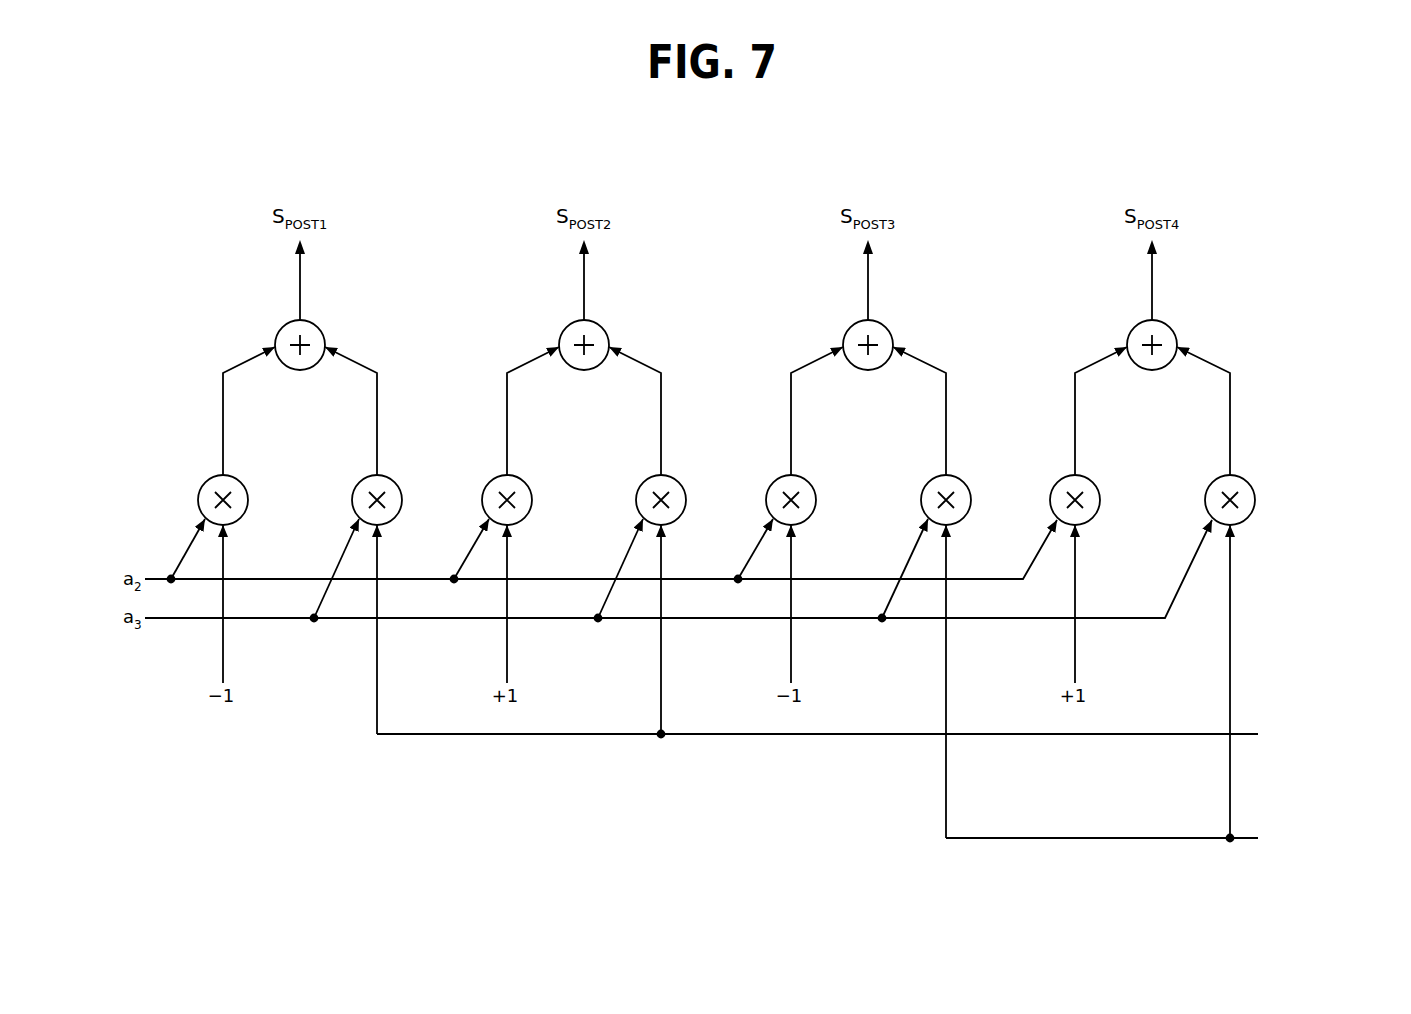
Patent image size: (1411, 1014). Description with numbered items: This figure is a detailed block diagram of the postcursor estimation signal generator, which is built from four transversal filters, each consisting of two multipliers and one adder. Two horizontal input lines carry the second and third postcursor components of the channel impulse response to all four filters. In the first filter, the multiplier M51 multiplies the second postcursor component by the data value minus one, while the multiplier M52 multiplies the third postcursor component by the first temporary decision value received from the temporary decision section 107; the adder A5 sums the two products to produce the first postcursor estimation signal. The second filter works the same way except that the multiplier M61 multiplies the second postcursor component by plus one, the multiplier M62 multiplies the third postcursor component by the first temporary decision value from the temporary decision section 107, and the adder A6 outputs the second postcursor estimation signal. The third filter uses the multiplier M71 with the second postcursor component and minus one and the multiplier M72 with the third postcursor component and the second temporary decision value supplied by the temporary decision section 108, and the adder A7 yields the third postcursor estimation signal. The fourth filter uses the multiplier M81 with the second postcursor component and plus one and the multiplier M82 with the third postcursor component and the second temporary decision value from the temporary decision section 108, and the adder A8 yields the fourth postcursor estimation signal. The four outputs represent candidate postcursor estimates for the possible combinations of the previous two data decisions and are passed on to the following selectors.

The adder A5 is at (318, 324).
The adder A6 is at (602, 324).
The adder A7 is at (886, 324).
The adder A8 is at (1170, 324).
The multiplier M51 is at (241, 483).
The multiplier M52 is at (395, 483).
The multiplier M61 is at (525, 483).
The multiplier M62 is at (679, 483).
The multiplier M71 is at (809, 483).
The multiplier M72 is at (964, 483).
The multiplier M81 is at (1093, 483).
The multiplier M82 is at (1248, 483).
The temporary decision section 107 is at (893, 732).
The temporary decision section 108 is at (1178, 836).